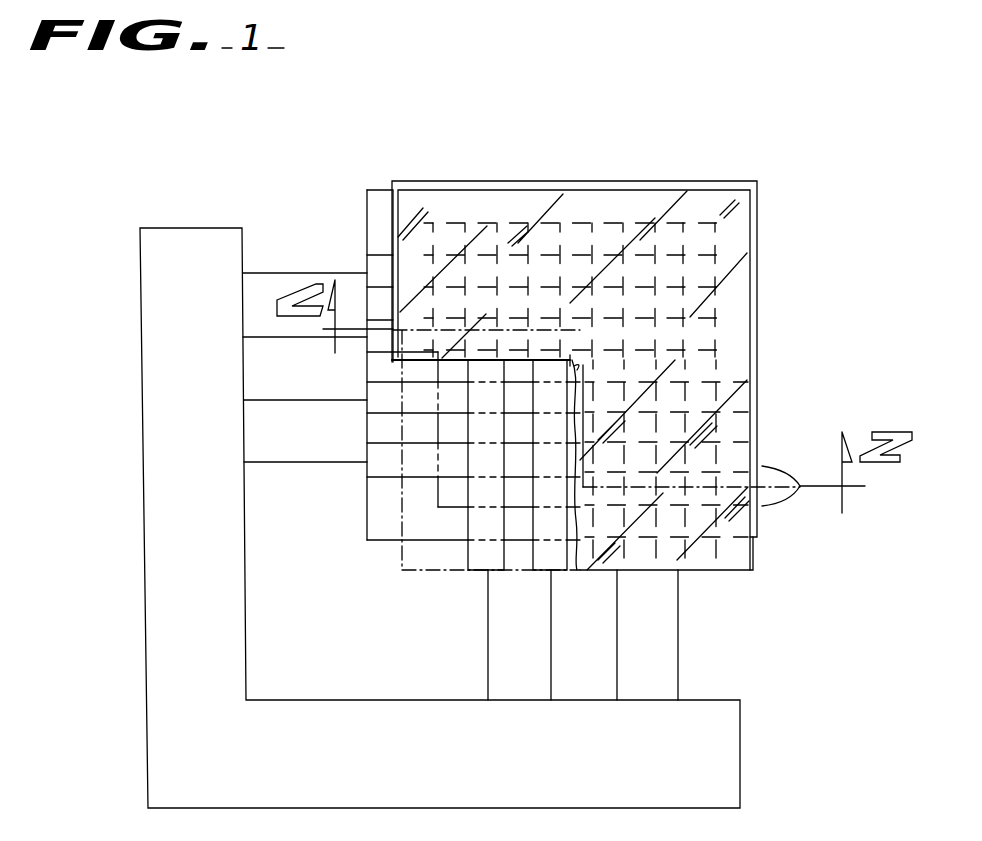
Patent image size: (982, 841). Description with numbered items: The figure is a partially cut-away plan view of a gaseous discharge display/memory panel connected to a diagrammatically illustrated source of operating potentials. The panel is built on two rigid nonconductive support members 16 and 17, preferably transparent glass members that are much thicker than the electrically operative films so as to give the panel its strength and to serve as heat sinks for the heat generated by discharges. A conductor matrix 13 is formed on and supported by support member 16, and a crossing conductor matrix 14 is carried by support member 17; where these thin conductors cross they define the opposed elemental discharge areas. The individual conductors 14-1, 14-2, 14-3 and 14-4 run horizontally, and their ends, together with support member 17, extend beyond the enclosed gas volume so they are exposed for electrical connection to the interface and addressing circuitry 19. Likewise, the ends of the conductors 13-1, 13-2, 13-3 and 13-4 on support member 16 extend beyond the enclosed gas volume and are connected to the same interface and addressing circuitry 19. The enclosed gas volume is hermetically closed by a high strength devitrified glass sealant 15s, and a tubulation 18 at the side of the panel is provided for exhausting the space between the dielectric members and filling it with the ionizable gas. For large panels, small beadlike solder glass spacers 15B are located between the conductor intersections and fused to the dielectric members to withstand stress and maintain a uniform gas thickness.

The conductor matrix 13 is at (464, 557).
The conductor 13-1 is at (470, 571).
The conductor 13-2 is at (550, 553).
The conductor 13-3 is at (618, 553).
The conductor 13-4 is at (683, 572).
The conductor matrix 14 is at (378, 249).
The conductor 14-1 is at (378, 271).
The conductor 14-2 is at (382, 346).
The conductor 14-3 is at (384, 404).
The conductor 14-4 is at (386, 462).
The devitrified glass sealant 15s is at (400, 187).
The beadlike solder glass spacers 15B is at (620, 340).
The nonconductive support member 16 is at (735, 553).
The nonconductive support member 17 is at (374, 204).
The tubulation 18 is at (771, 476).
The interface and addressing circuitry 19 is at (158, 460).